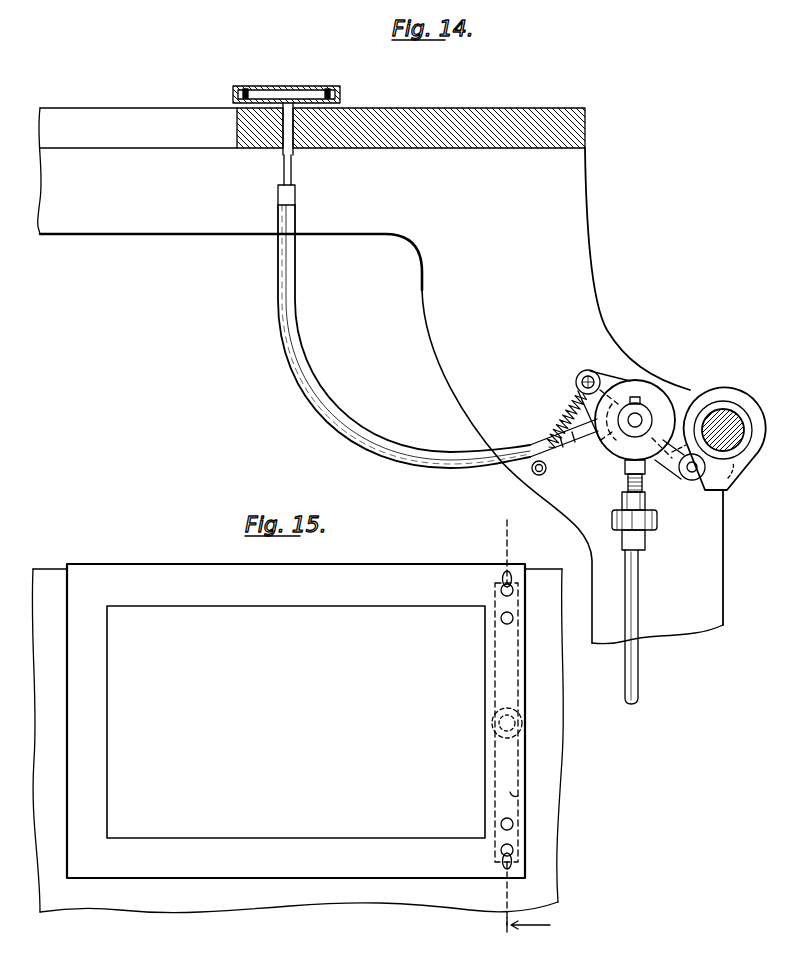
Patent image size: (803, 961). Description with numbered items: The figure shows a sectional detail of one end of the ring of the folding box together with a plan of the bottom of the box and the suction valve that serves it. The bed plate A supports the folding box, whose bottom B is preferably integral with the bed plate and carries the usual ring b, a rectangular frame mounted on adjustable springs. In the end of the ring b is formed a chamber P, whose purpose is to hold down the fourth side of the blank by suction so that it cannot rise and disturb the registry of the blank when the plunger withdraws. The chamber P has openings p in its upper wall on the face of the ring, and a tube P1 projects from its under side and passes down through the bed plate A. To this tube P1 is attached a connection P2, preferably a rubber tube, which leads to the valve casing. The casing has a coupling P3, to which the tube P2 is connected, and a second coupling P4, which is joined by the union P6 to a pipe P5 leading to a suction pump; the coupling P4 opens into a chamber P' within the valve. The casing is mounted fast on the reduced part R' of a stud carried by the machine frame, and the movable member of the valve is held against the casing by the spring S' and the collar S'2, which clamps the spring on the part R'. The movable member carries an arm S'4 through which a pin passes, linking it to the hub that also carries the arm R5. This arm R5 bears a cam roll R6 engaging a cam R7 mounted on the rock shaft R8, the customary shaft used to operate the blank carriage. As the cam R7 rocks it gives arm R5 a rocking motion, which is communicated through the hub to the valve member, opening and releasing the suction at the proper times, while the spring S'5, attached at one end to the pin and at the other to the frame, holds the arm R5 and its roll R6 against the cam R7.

In FIG. 14, the bed plate A is at (528, 109).
In FIG. 15, the bed plate A is at (562, 816).
In FIG. 14, the chamber P is at (286, 108).
In FIG. 15, the chamber P is at (543, 726).
In FIG. 14, the openings p is at (245, 89).
In FIG. 15, the openings p is at (512, 618).
In FIG. 14, the tube P1 is at (284, 165).
In FIG. 14, the connection P2 is at (352, 408).
In FIG. 14, the coupling P3 is at (600, 446).
In FIG. 14, the second coupling P4 is at (626, 468).
In FIG. 14, the pipe P5 is at (640, 616).
In FIG. 14, the union P6 is at (658, 524).
In FIG. 14, the spring S' is at (630, 408).
In FIG. 14, the collar S'2 is at (669, 398).
In FIG. 14, the arm S'4 is at (583, 365).
In FIG. 14, the spring S'5 is at (554, 421).
In FIG. 14, the reduced part of stud R' is at (675, 436).
In FIG. 14, the arm R5 is at (675, 466).
In FIG. 14, the cam roll R6 is at (689, 481).
In FIG. 14, the cam R7 is at (735, 490).
In FIG. 14, the rock shaft R8 is at (728, 408).
In FIG. 15, the ring b is at (142, 569).
In FIG. 15, the bottom of folding box B is at (222, 645).
In FIG. 15, the chamber P' is at (545, 723).